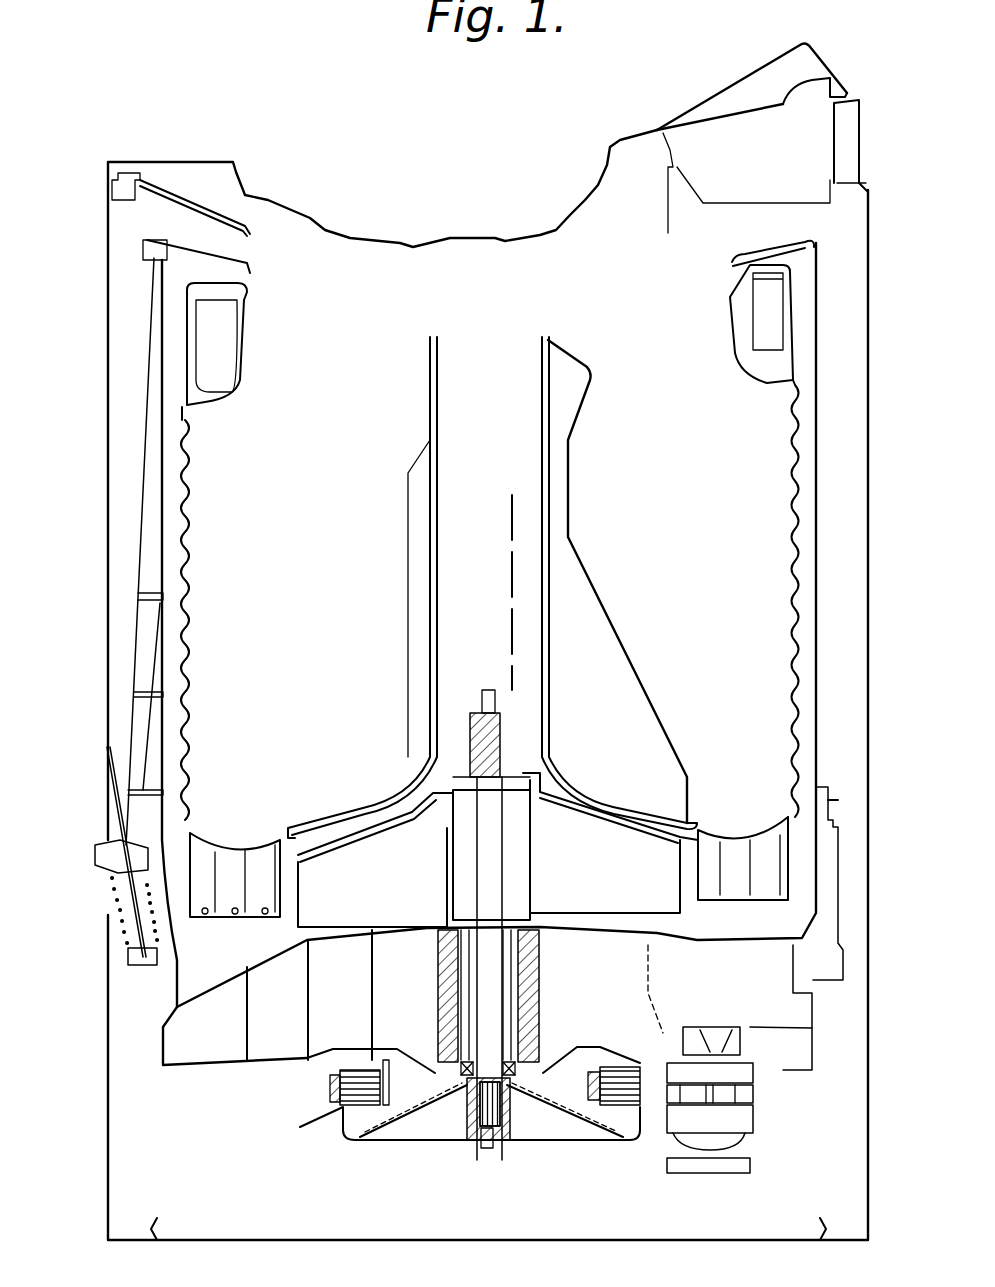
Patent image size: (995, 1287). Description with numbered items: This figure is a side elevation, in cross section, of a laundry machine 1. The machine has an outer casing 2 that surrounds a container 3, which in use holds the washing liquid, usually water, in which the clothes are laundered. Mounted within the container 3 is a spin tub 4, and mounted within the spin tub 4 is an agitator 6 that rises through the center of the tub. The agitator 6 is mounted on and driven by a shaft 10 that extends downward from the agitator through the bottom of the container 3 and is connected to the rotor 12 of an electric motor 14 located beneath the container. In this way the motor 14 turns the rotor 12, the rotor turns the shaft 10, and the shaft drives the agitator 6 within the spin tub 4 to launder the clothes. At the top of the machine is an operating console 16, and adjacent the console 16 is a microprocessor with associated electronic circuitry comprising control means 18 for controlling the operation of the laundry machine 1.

The laundry machine 1 is at (96, 240).
The outer casing 2 is at (108, 620).
The container 3 is at (168, 665).
The spin tub 4 is at (185, 510).
The agitator 6 is at (627, 723).
The shaft 10 is at (457, 757).
The rotor 12 is at (333, 1098).
The electric motor 14 is at (440, 1148).
The operating console 16 is at (717, 92).
The control means 18 is at (806, 74).